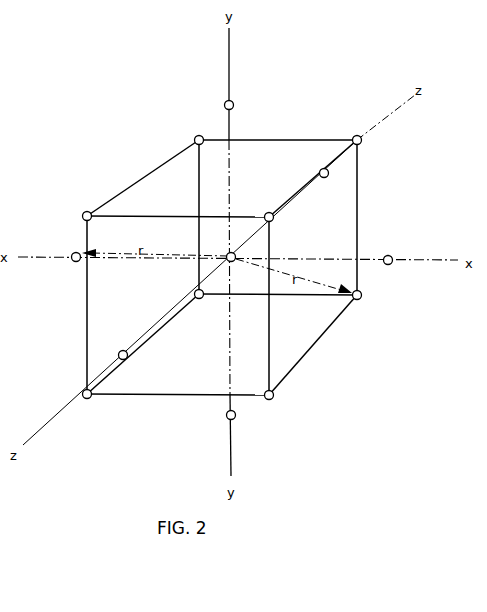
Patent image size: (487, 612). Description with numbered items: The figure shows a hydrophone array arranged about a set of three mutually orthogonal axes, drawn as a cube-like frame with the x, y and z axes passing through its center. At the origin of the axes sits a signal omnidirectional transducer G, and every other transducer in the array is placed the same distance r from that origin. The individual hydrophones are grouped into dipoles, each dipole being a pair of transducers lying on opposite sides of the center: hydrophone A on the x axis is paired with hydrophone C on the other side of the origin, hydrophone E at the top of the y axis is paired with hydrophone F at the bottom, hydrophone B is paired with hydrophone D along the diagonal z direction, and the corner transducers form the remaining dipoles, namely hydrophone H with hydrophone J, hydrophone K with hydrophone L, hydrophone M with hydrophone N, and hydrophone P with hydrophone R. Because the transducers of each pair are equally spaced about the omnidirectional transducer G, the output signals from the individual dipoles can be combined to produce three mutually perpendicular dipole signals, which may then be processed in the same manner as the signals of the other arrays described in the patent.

The hydrophone A is at (396, 255).
The hydrophone B is at (116, 348).
The hydrophone C is at (69, 250).
The hydrophone D is at (330, 181).
The hydrophone E is at (236, 105).
The hydrophone F is at (236, 426).
The omnidirectional transducer G is at (224, 248).
The hydrophone H is at (348, 133).
The hydrophone J is at (90, 403).
The hydrophone K is at (264, 207).
The hydrophone L is at (203, 305).
The hydrophone M is at (362, 305).
The hydrophone N is at (85, 206).
The hydrophone P is at (275, 404).
The hydrophone R is at (206, 133).